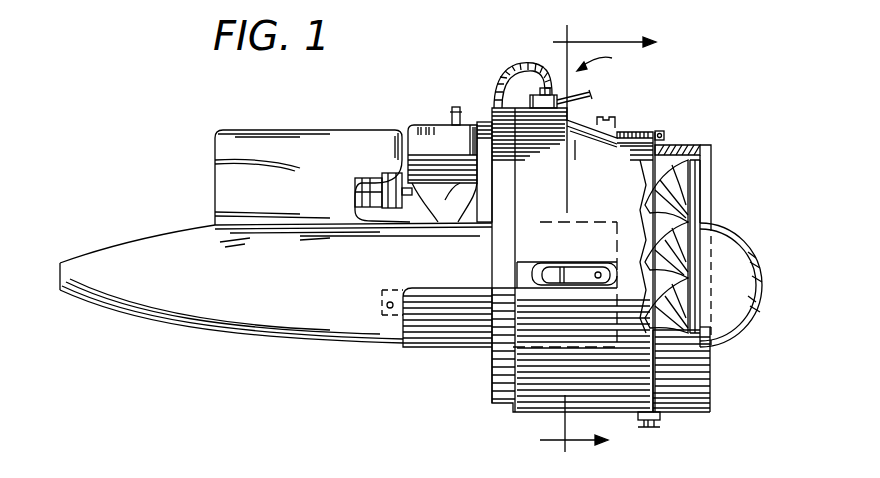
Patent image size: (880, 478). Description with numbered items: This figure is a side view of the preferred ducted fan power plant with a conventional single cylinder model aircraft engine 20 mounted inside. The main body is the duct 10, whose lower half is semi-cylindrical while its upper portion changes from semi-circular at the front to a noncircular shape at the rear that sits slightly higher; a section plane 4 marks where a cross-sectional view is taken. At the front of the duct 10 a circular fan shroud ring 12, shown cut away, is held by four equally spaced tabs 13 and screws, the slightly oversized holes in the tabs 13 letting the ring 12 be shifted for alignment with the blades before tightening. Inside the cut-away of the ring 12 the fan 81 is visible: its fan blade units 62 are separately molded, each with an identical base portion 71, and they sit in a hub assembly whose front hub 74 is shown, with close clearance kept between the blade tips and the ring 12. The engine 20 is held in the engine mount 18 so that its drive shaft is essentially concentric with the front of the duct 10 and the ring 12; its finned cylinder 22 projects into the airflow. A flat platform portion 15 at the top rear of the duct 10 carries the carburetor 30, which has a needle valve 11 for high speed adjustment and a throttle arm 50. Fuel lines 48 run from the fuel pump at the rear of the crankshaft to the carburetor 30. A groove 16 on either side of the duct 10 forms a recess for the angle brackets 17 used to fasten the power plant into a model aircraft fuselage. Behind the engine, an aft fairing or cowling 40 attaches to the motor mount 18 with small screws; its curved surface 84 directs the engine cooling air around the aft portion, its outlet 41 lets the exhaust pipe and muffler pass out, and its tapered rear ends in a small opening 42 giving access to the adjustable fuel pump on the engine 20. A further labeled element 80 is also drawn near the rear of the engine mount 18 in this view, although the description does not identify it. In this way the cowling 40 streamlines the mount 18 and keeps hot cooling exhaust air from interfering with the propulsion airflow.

The section plane 4— 4 is at (607, 238).
The duct 10 is at (632, 162).
The needle valve 11 is at (560, 97).
The fan shroud ring 12 is at (705, 146).
The tabs 13 is at (664, 134).
The flat platform portion 15 is at (575, 145).
The groove 16 is at (524, 272).
The angle brackets 17 is at (584, 286).
The engine mount 18 is at (440, 348).
The model aircraft engine 20 is at (471, 100).
The cylinder 22 is at (440, 125).
The carburetor 30 is at (604, 60).
The aft fairing or cowling 40 is at (150, 328).
The outlet 41 is at (215, 197).
The opening 42 is at (58, 264).
The fuel lines 48 is at (510, 70).
The throttle arm 50 is at (593, 98).
The fan blade units 62 is at (690, 200).
The base portion 71 is at (707, 262).
The front hub 74 is at (736, 350).
The motor mount 80 is at (367, 212).
The fan 81 is at (712, 174).
The curved surface 84 is at (392, 140).